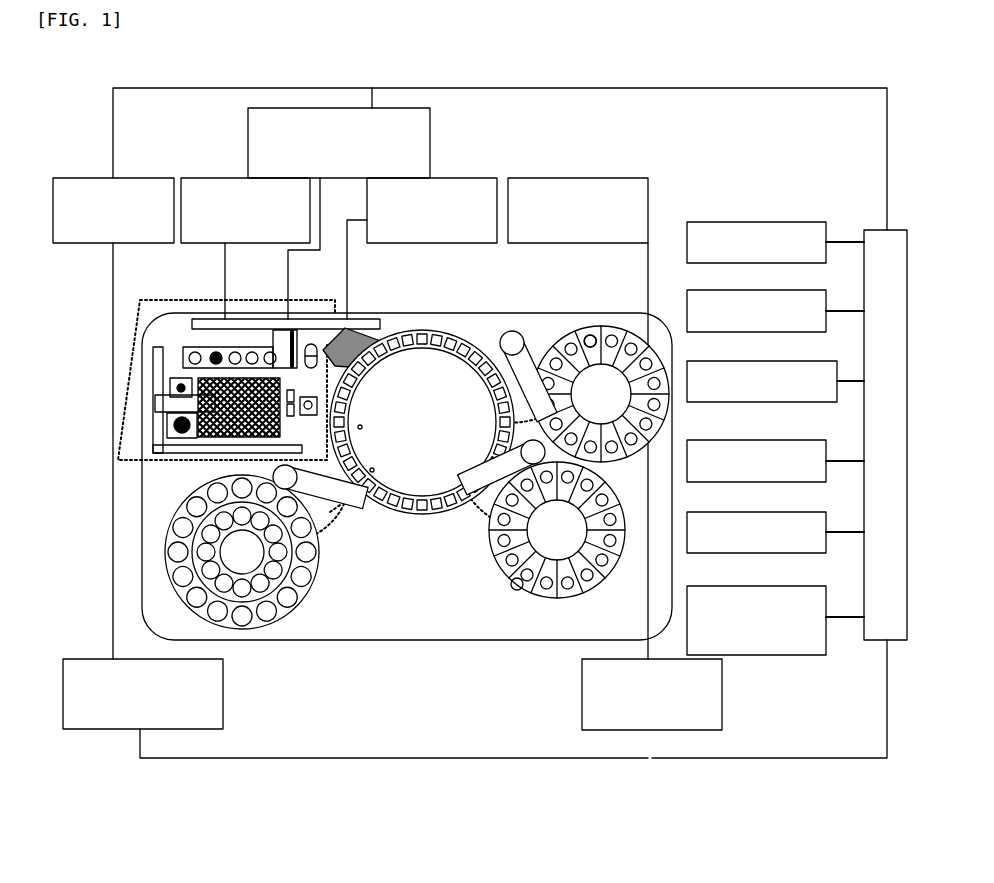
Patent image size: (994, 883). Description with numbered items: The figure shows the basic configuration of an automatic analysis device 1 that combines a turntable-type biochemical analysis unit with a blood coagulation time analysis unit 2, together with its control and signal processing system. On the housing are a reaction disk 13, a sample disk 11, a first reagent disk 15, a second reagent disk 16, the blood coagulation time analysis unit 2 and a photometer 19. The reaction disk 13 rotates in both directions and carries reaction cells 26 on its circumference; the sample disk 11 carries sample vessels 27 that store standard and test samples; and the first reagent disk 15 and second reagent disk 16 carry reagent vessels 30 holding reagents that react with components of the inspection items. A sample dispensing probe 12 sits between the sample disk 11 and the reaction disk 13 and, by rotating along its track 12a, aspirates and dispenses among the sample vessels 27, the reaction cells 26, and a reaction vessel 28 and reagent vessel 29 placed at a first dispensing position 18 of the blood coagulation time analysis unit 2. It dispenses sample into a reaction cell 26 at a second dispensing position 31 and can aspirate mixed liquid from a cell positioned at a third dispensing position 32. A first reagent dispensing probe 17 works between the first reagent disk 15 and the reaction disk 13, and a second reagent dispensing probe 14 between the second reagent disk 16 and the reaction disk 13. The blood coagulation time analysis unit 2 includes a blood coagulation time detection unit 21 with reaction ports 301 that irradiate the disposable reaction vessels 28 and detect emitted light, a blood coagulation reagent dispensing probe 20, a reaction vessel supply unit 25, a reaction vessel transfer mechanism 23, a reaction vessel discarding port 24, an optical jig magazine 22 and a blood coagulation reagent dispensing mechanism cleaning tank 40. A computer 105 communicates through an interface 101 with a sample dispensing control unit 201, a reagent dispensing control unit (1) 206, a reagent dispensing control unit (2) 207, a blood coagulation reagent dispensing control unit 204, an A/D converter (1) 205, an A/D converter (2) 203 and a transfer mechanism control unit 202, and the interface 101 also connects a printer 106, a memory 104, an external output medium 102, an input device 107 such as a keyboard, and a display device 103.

The automatic analysis device 1 is at (143, 540).
The blood coagulation time analysis unit 2 is at (231, 393).
The sample disk 11 is at (247, 590).
The sample dispensing probe 12 is at (318, 520).
The track 12a is at (350, 518).
The reaction disk 13 is at (422, 433).
The second reagent dispensing probe 14 is at (463, 545).
The first reagent disk 15 is at (640, 332).
The second reagent disk 16 is at (520, 605).
The first reagent dispensing probe 17 is at (518, 332).
The first dispensing position 18 is at (300, 392).
The photometer 19 is at (355, 328).
The blood coagulation reagent dispensing probe 20 is at (140, 302).
The blood coagulation time detection unit 21 is at (158, 363).
The optical jig magazine 22 is at (170, 388).
The reaction vessel transfer mechanism 23 is at (173, 405).
The reaction vessel discarding port 24 is at (182, 428).
The reaction vessel supply unit 25 is at (205, 440).
The reaction cell 26 is at (422, 393).
The sample vessel 27 is at (249, 557).
The reaction vessel 28 is at (217, 357).
The reagent vessel 29 is at (422, 388).
The reagent vessel 30 is at (591, 336).
The second dispensing position 31 is at (392, 408).
The third dispensing position 32 is at (407, 443).
The blood coagulation reagent dispensing mechanism cleaning tank 40 is at (311, 345).
The interface 101 is at (872, 645).
The external output medium 102 is at (772, 587).
The display device 103 is at (782, 513).
The memory 104 is at (778, 441).
The computer 105 is at (776, 362).
The printer 106 is at (765, 291).
The input device 107 is at (765, 224).
The sample dispensing control unit 201 is at (223, 690).
The transfer mechanism control unit 202 is at (70, 178).
The A/D converter (2) 203 is at (200, 178).
The blood coagulation reagent dispensing control unit 204 is at (371, 108).
The A/D converter (1) 205 is at (458, 180).
The reagent dispensing control unit (1) 206 is at (650, 180).
The reagent dispensing control unit (2) 207 is at (582, 680).
The reaction port 301 is at (183, 357).